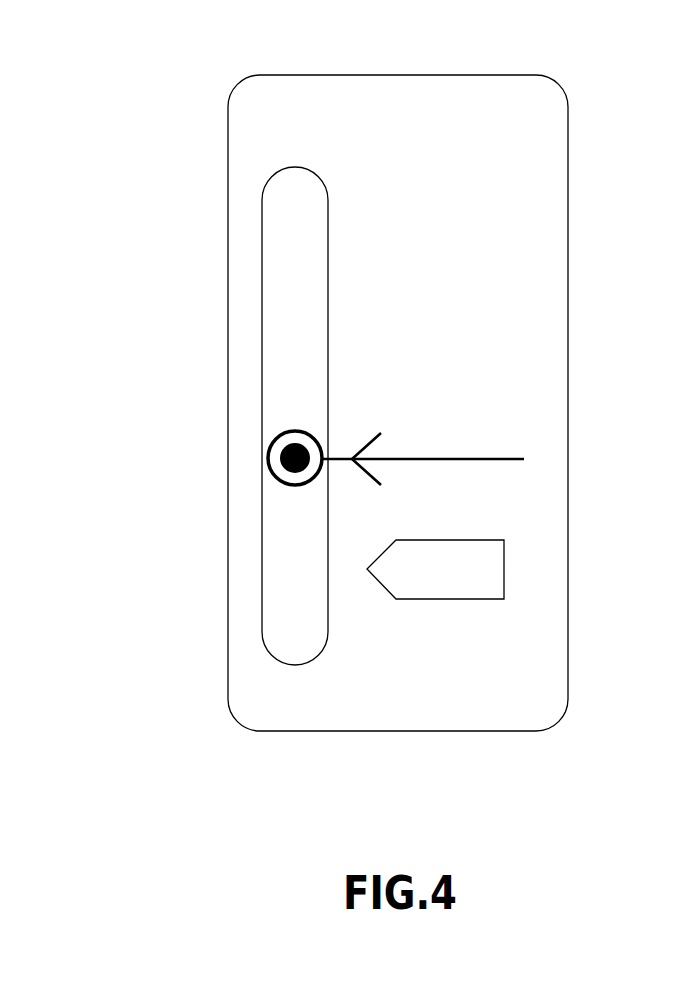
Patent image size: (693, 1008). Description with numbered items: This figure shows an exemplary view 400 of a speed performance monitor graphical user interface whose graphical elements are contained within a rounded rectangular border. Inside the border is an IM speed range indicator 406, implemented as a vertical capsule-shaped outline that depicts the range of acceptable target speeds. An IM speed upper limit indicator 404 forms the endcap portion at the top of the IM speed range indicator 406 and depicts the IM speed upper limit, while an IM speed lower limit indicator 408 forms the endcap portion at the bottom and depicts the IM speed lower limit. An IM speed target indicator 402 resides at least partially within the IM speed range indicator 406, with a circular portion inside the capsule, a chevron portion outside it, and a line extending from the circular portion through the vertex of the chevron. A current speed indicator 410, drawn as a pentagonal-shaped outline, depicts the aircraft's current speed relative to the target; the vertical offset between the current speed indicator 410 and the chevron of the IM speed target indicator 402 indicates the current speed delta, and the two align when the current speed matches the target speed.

The exemplary view 400 is at (176, 43).
The IM speed target indicator 402 is at (278, 437).
The IM speed upper limit indicator 404 is at (235, 417).
The IM speed range indicator 406 is at (235, 434).
The IM speed lower limit indicator 408 is at (297, 663).
The current speed indicator 410 is at (504, 568).